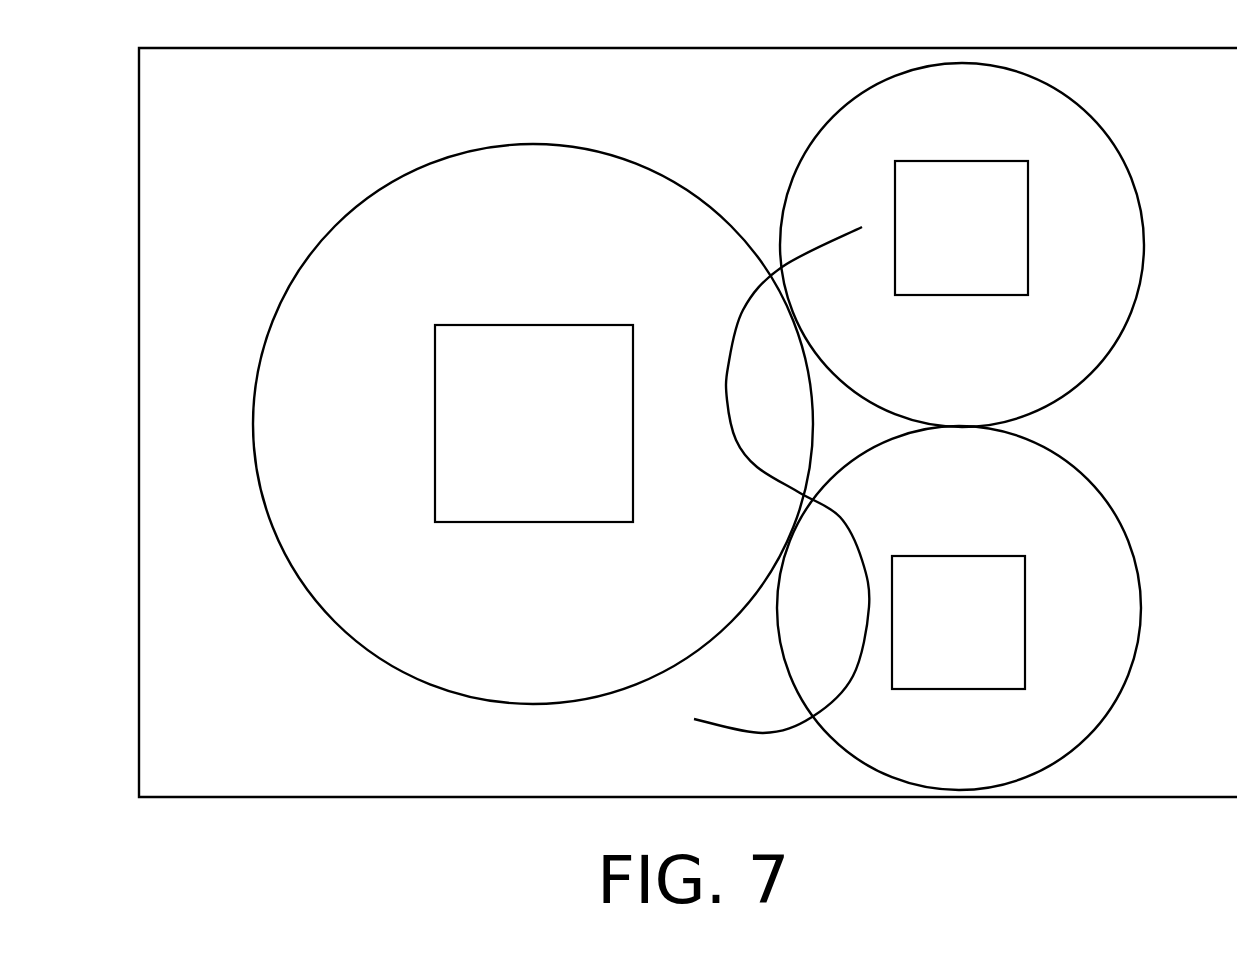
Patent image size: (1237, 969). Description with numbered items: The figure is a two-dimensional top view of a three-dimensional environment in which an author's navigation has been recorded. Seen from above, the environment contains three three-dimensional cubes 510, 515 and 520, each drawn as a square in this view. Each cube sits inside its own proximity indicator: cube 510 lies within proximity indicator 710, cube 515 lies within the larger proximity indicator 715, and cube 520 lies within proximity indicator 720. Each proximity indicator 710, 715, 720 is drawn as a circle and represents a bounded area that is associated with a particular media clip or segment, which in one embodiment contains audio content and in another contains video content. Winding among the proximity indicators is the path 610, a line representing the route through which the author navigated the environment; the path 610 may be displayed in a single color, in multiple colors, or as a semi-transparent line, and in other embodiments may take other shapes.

The three-dimensional cube 510 is at (953, 556).
The three-dimensional cube 515 is at (533, 325).
The three-dimensional cube 520 is at (965, 161).
The path 610 is at (760, 735).
The proximity indicator 710 is at (1108, 503).
The proximity indicator 715 is at (607, 153).
The proximity indicator 720 is at (1128, 175).